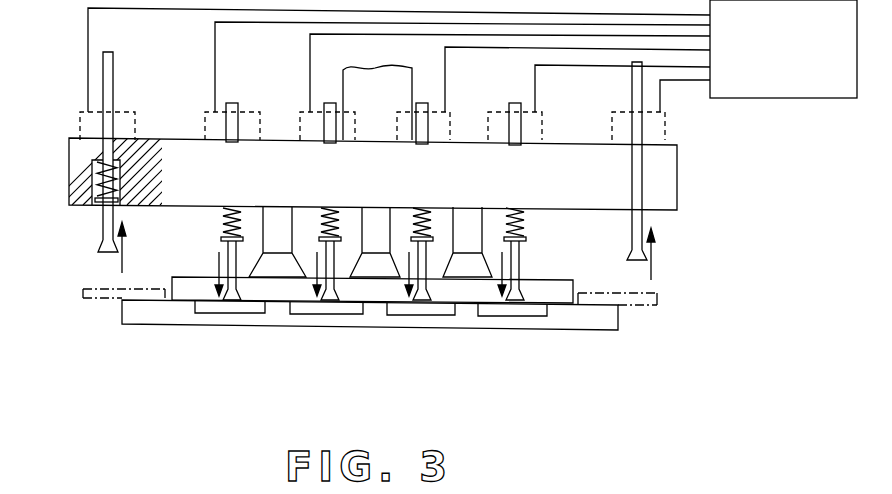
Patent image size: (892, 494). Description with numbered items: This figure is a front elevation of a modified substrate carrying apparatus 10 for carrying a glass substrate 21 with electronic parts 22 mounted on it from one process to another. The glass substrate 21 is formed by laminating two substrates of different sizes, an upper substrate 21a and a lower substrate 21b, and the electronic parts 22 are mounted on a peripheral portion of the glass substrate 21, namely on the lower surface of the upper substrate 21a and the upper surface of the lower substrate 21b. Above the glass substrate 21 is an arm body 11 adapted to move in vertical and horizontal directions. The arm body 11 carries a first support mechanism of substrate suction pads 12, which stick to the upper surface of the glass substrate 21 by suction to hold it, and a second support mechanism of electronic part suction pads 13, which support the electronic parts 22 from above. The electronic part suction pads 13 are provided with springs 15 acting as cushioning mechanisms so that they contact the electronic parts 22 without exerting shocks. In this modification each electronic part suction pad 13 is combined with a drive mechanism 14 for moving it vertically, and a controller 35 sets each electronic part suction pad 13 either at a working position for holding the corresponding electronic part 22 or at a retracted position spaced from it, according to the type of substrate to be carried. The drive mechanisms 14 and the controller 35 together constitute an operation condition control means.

The substrate carrying apparatus 10 is at (343, 95).
The arm body 11 is at (474, 157).
The substrate suction pads 12 is at (294, 228).
The electronic part suction pads 13 is at (98, 225).
The drive mechanisms 14 is at (135, 112).
The springs 15 is at (69, 171).
The glass substrate 21 is at (382, 347).
The upper substrate 21a is at (565, 300).
The lower substrate 21b is at (548, 330).
The electronic parts 22 is at (262, 312).
The controller 35 is at (782, 99).